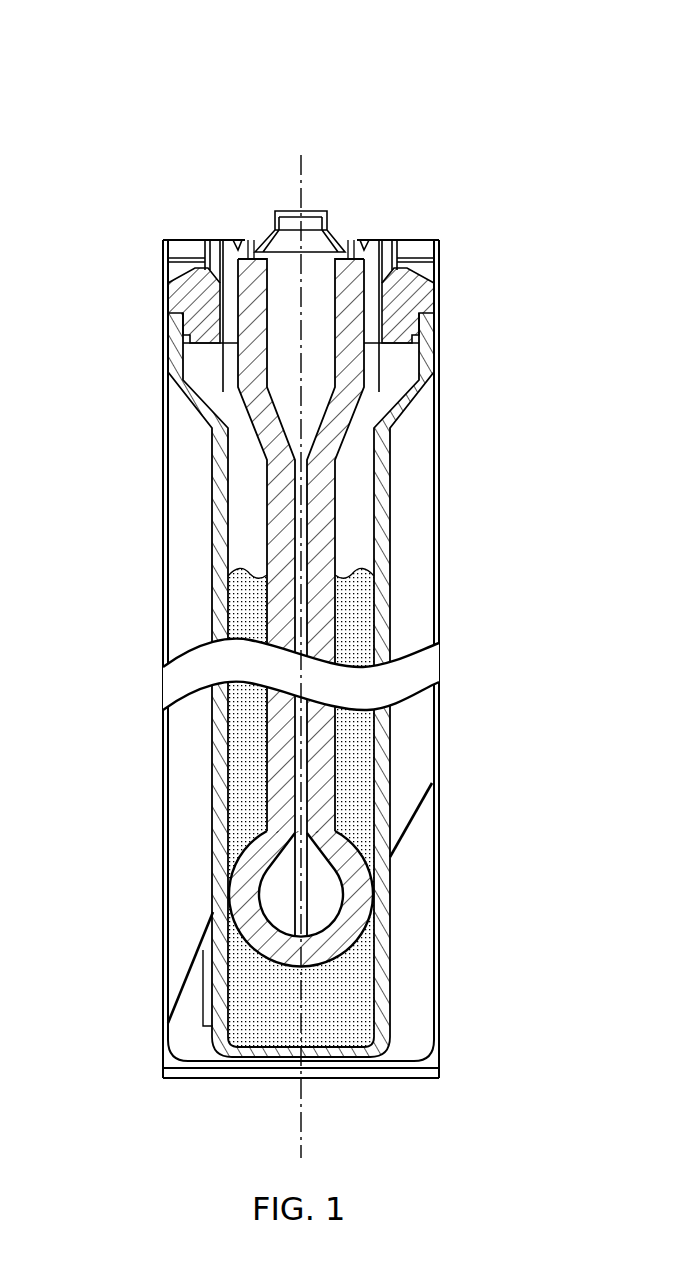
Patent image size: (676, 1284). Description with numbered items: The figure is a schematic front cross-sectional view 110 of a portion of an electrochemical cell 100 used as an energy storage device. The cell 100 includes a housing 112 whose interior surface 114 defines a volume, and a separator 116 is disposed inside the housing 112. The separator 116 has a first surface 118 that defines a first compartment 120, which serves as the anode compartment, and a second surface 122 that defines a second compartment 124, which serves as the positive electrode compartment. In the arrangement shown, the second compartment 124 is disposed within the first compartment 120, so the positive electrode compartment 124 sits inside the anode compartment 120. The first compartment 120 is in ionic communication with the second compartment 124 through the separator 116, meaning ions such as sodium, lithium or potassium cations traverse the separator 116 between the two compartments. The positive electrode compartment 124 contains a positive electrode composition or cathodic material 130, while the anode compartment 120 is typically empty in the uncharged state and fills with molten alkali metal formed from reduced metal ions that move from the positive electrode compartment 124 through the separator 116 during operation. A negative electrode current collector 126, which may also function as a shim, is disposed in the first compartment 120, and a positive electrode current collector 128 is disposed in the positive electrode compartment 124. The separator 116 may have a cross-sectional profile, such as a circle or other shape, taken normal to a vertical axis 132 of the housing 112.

The electrochemical cell 100 is at (325, 587).
The front cross-sectional view 110 is at (307, 656).
The housing 112 is at (444, 358).
The interior surface 114 is at (170, 848).
The separator 116 is at (393, 484).
The first surface 118 is at (391, 740).
The first compartment 120 is at (408, 933).
The second surface 122 is at (228, 505).
The second compartment 124 is at (244, 545).
The negative electrode current collector 126 is at (404, 829).
The positive electrode current collector 128 is at (353, 887).
The cathodic material 130 is at (244, 612).
The vertical axis 132 is at (302, 1112).